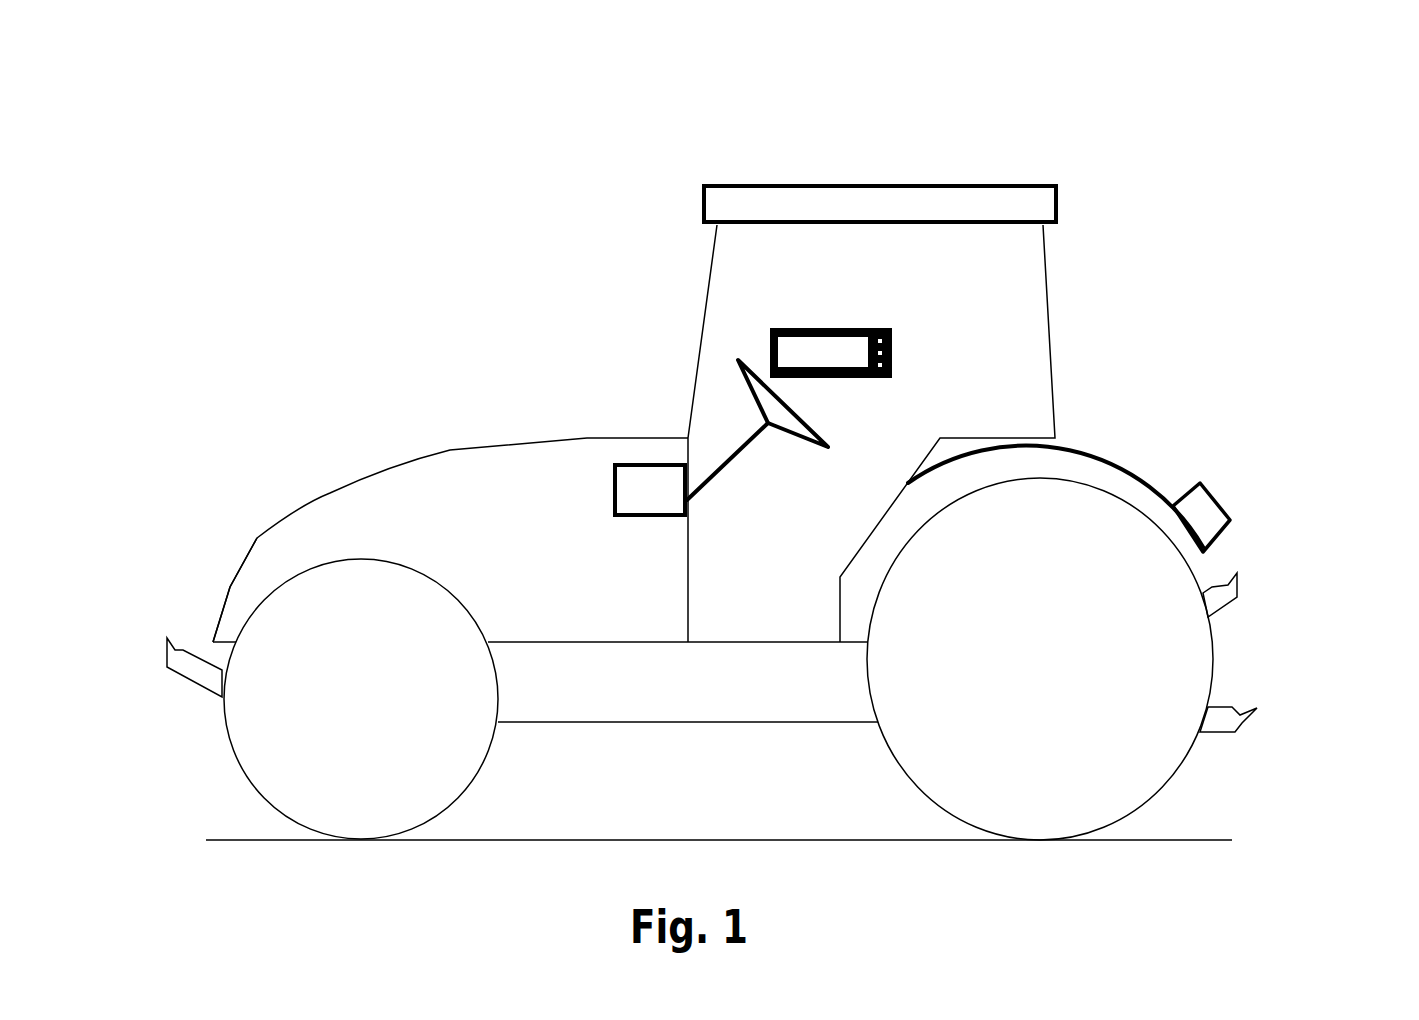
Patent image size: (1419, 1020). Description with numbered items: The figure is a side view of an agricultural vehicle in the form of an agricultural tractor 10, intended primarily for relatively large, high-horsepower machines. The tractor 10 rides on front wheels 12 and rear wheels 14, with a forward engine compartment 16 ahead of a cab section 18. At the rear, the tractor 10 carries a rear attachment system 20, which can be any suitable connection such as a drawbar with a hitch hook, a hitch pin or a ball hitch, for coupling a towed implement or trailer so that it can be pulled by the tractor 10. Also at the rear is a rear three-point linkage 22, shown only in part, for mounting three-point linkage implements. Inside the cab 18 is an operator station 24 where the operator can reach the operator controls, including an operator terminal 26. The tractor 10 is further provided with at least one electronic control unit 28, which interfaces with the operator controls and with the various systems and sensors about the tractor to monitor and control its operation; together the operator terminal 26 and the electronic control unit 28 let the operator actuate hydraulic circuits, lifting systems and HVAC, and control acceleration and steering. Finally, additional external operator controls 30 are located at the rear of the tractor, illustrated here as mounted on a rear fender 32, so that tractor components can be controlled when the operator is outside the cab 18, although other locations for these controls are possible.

The agricultural tractor 10 is at (296, 200).
The front wheels 12 is at (350, 817).
The rear wheels 14 is at (1073, 792).
The forward engine compartment 16 is at (358, 532).
The cab section 18 is at (997, 300).
The rear attachment system 20 is at (1227, 717).
The rear three-point linkage 22 is at (1227, 597).
The operator station 24 is at (662, 323).
The operator terminal 26 is at (770, 333).
The electronic control unit 28 is at (645, 475).
The external operator controls 30 is at (1207, 517).
The rear fender 32 is at (1112, 458).